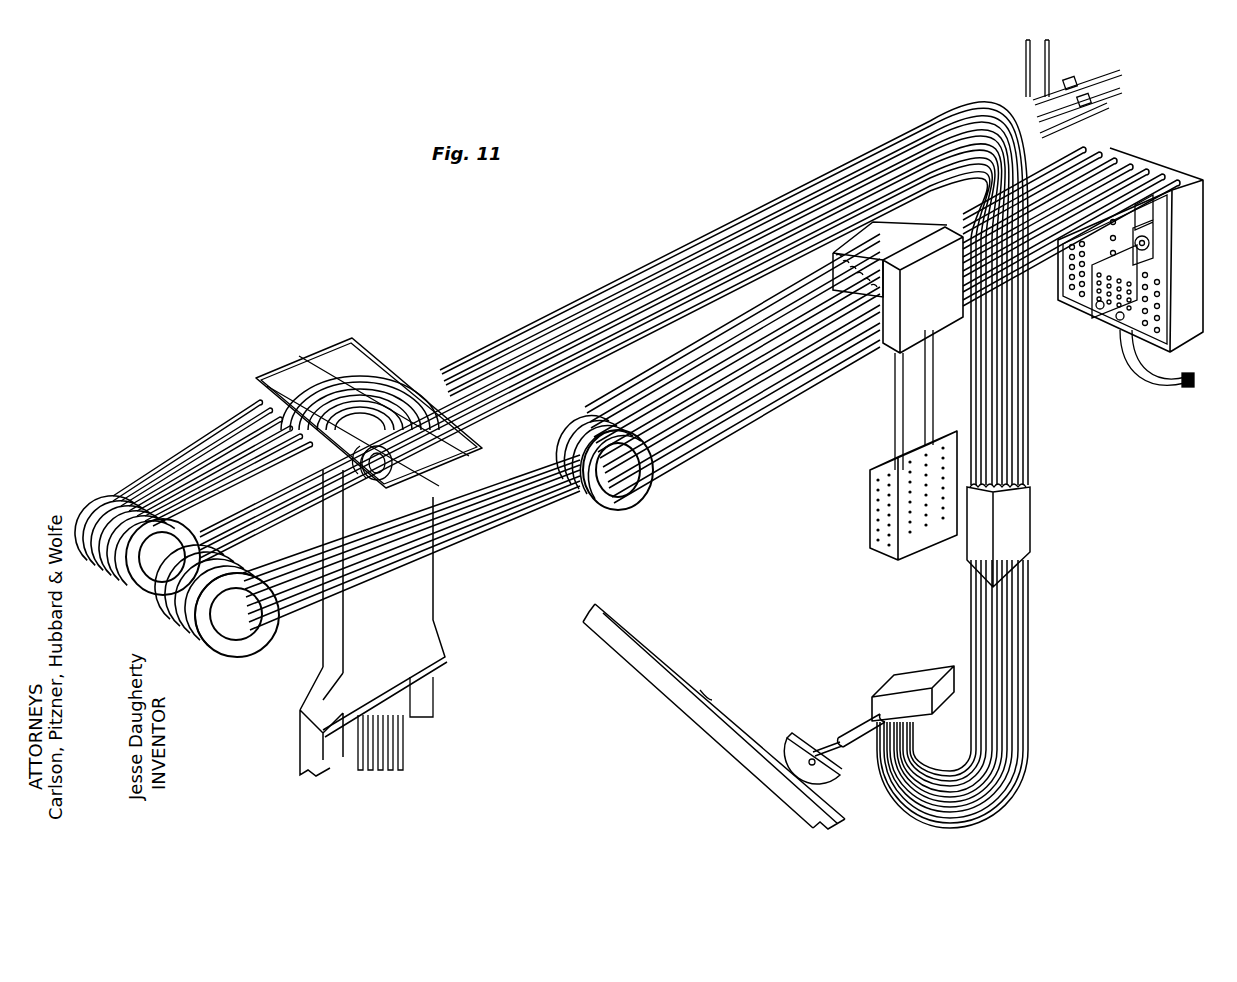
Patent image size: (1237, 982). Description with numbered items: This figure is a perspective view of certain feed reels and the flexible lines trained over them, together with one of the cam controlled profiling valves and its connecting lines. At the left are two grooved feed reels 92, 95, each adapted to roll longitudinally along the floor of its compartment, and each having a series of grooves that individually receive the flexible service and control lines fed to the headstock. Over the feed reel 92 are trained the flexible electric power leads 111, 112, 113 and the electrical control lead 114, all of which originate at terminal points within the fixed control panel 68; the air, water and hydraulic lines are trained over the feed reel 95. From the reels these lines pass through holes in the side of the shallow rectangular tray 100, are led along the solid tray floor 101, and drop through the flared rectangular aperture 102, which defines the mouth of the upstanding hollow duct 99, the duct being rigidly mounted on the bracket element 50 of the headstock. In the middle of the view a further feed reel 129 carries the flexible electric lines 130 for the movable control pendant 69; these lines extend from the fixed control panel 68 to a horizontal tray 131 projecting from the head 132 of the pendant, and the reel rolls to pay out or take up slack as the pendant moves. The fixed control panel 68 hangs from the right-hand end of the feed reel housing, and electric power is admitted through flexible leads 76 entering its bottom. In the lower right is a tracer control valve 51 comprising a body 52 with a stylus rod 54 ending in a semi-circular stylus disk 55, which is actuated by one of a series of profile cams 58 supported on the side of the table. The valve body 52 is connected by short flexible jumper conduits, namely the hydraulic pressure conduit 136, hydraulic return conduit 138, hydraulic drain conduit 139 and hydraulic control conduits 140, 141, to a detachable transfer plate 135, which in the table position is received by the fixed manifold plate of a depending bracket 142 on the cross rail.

The bracket element 50 is at (303, 752).
The tracer control valve 51 is at (858, 723).
The valve body 52 is at (930, 704).
The stylus rod 54 is at (828, 745).
The stylus disk 55 is at (788, 746).
The profile cam 58 is at (692, 692).
The fixed control panel 68 is at (1205, 298).
The pendant 69 is at (861, 522).
The flexible leads 76 is at (1190, 388).
The feed reel 92 is at (243, 640).
The feed reel 95 is at (120, 478).
The duct 99 is at (425, 617).
The tray 100 is at (358, 344).
The tray floor 101 is at (358, 372).
The flared rectangular aperture 102 is at (405, 432).
The electric power lead 111 is at (490, 478).
The electric power lead 112 is at (490, 488).
The electric power lead 113 is at (482, 498).
The electrical control lead 114 is at (475, 508).
The feed reel 129 is at (612, 498).
The flexible electric lines 130 is at (728, 432).
The horizontal tray 131 is at (904, 230).
The head 132 is at (938, 322).
The transfer plate 135 is at (1027, 562).
The hydraulic pressure conduit 136 is at (1030, 620).
The hydraulic return conduit 138 is at (1020, 645).
The hydraulic drain conduit 139 is at (1005, 670).
The hydraulic control conduit 140 is at (992, 700).
The hydraulic control conduit 141 is at (982, 722).
The depending bracket 142 is at (1032, 518).